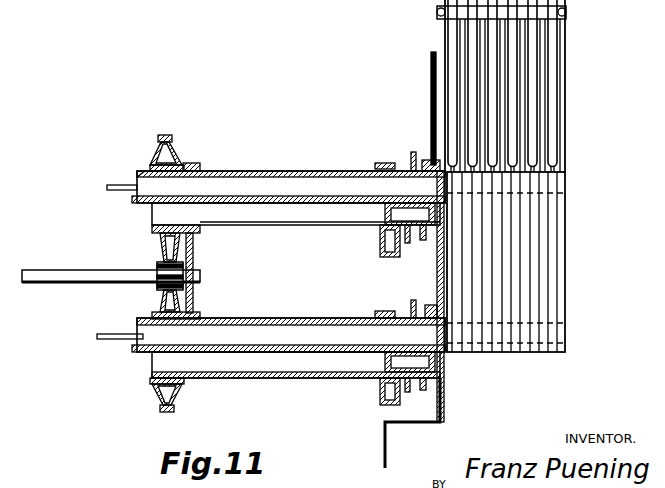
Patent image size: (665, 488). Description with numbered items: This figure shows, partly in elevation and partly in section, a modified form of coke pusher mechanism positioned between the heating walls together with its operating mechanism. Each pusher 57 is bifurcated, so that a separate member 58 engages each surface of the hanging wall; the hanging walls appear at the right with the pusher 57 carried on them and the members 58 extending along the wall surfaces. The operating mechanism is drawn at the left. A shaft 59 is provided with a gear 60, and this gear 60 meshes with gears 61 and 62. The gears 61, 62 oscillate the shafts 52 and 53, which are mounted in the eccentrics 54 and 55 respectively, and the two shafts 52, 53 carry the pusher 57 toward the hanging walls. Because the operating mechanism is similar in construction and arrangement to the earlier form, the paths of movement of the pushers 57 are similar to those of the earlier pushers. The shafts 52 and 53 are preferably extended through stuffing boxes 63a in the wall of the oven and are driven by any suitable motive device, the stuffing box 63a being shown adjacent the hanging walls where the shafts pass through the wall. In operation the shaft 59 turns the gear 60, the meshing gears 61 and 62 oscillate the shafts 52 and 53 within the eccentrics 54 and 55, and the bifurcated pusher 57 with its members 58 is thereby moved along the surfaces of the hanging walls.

The shaft 52 is at (323, 182).
The shaft 53 is at (312, 332).
The eccentric 54 is at (315, 224).
The eccentric 55 is at (325, 379).
The pusher 57 is at (550, 240).
The member 58 is at (535, 95).
The shaft 59 is at (62, 283).
The gear 60 is at (157, 281).
The gear 61 is at (175, 160).
The gear 62 is at (160, 395).
The stuffing box 63a is at (420, 158).